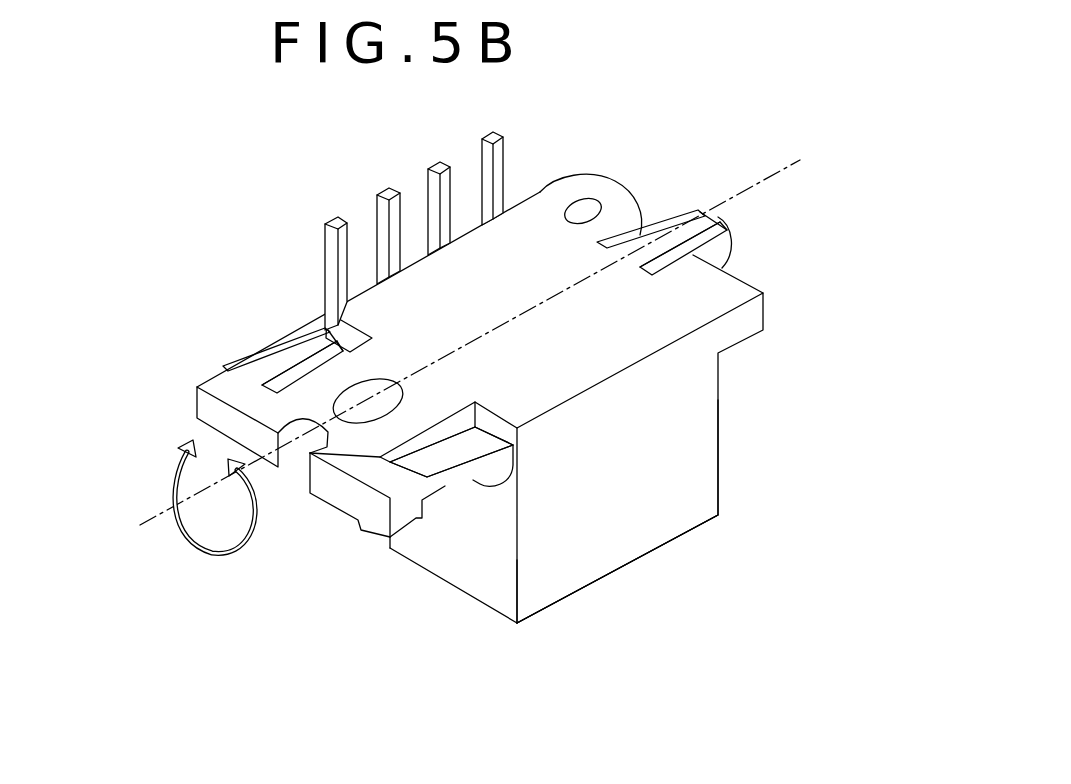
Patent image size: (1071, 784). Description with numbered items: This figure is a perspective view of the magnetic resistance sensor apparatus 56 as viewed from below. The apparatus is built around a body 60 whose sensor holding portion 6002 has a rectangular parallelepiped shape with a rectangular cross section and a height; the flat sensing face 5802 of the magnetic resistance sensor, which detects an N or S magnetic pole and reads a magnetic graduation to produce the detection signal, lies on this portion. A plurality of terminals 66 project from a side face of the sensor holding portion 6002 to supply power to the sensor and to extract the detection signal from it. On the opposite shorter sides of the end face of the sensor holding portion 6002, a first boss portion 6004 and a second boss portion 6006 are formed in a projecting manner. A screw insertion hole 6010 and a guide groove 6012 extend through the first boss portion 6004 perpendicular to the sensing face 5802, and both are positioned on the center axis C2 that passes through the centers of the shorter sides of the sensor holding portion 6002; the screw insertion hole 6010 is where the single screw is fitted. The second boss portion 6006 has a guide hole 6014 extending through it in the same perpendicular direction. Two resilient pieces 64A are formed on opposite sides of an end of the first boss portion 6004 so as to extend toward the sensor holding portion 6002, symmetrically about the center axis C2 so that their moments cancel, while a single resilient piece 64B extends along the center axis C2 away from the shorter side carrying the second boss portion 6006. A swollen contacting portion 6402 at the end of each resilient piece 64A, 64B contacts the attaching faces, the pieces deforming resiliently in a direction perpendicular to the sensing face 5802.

The magnetic resistance sensor apparatus 56 is at (605, 599).
The body 60 is at (692, 452).
The terminals 66 is at (482, 150).
The resilient pieces 64A is at (285, 353).
The resilient piece 64B is at (717, 217).
The sensor holding portion 6002 is at (683, 515).
The first boss portion 6004 is at (228, 366).
The second boss portion 6006 is at (615, 195).
The screw insertion hole 6010 is at (304, 346).
The guide groove 6012 is at (325, 440).
The guide hole 6014 is at (583, 200).
The contacting portion 6402 is at (498, 482).
The sensing face 5802 is at (652, 553).
The center axis C2 is at (451, 357).